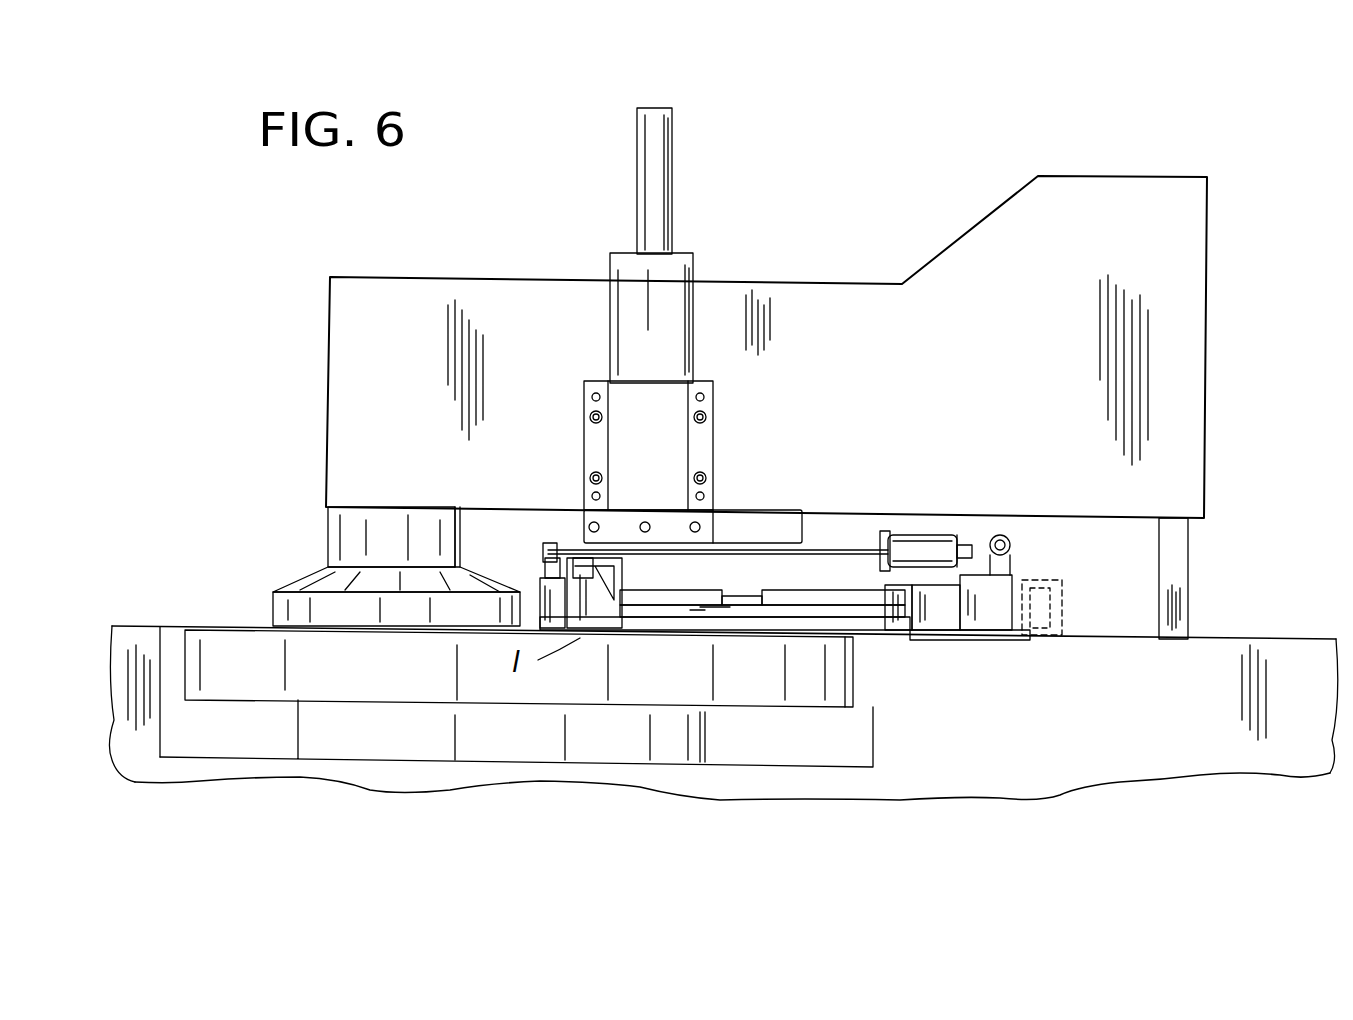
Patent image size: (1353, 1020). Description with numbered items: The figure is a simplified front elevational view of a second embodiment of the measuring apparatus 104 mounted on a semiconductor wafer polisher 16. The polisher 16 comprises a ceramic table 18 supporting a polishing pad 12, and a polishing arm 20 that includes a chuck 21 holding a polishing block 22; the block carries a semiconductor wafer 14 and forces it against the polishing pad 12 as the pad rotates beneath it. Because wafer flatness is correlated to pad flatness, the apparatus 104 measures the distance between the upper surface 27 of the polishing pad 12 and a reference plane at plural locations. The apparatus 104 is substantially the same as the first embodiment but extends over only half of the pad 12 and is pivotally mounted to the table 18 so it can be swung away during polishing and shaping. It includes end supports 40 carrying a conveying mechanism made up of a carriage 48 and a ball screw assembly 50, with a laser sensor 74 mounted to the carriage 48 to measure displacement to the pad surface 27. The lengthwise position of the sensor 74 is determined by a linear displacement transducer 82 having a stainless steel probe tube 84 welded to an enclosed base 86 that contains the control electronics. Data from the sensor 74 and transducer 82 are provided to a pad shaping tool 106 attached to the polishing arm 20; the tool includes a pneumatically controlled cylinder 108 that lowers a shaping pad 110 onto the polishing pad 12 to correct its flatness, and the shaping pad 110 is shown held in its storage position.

The polishing pad 12 is at (205, 626).
The semiconductor wafer 14 is at (496, 638).
The wafer polisher 16 is at (1128, 162).
The ceramic table 18 is at (435, 683).
The polishing arm 20 is at (1190, 272).
The chuck 21 is at (318, 580).
The polishing block 22 is at (268, 620).
The upper surface of the polishing pad 27 is at (225, 628).
The end support 40 is at (545, 586).
The carriage 48 is at (782, 596).
The ball screw assembly 50 is at (740, 596).
The laser sensor 74 is at (600, 628).
The linear displacement transducer 82 is at (940, 548).
The stainless steel tube (probe) 84 is at (836, 548).
The stainless steel base 86 is at (914, 545).
The apparatus for measuring the polishing pad 104 is at (1098, 584).
The pad shaping tool 106 is at (680, 134).
The pneumatically controlled cylinder 108 is at (660, 283).
The shaping pad 110 is at (738, 525).